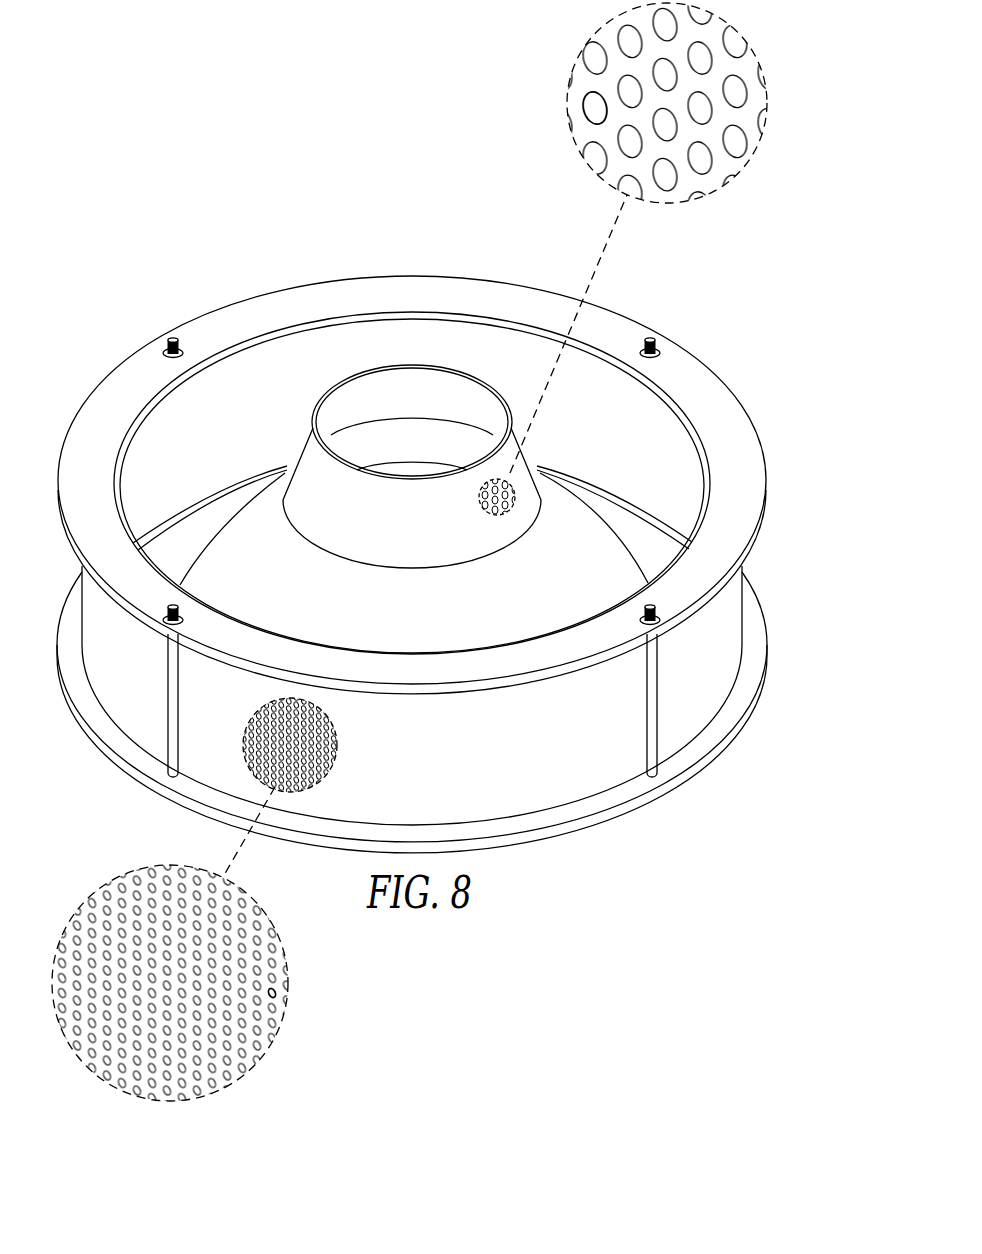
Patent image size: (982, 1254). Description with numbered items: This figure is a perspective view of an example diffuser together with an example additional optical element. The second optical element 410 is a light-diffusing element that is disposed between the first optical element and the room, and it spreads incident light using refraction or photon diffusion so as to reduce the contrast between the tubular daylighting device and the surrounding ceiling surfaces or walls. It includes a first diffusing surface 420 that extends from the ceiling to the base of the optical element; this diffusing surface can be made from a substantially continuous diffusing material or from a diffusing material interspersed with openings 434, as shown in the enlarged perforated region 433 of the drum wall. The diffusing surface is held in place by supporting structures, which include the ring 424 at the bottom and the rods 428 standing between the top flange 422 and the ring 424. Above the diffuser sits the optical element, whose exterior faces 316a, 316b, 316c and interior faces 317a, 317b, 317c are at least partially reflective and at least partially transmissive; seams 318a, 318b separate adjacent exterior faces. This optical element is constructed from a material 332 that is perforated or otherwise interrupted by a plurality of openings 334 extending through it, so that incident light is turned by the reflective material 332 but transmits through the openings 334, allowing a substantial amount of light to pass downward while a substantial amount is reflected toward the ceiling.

The second optical element 410 is at (713, 320).
The first diffusing surface 420 is at (547, 772).
The top flange ring 422 is at (86, 433).
The ring 424 is at (117, 733).
The rod 428 is at (657, 717).
The exterior face 316a is at (308, 448).
The exterior face 316b is at (247, 523).
The exterior face 316c is at (630, 523).
The interior face 317a is at (422, 393).
The interior face 317b is at (368, 440).
The interior face 317c is at (435, 472).
The dish seam 318a is at (283, 503).
The dish seam 318b is at (203, 540).
The material 332 is at (715, 54).
The openings 334 is at (593, 107).
The drum perforated region 433 is at (263, 957).
The openings 434 is at (274, 993).